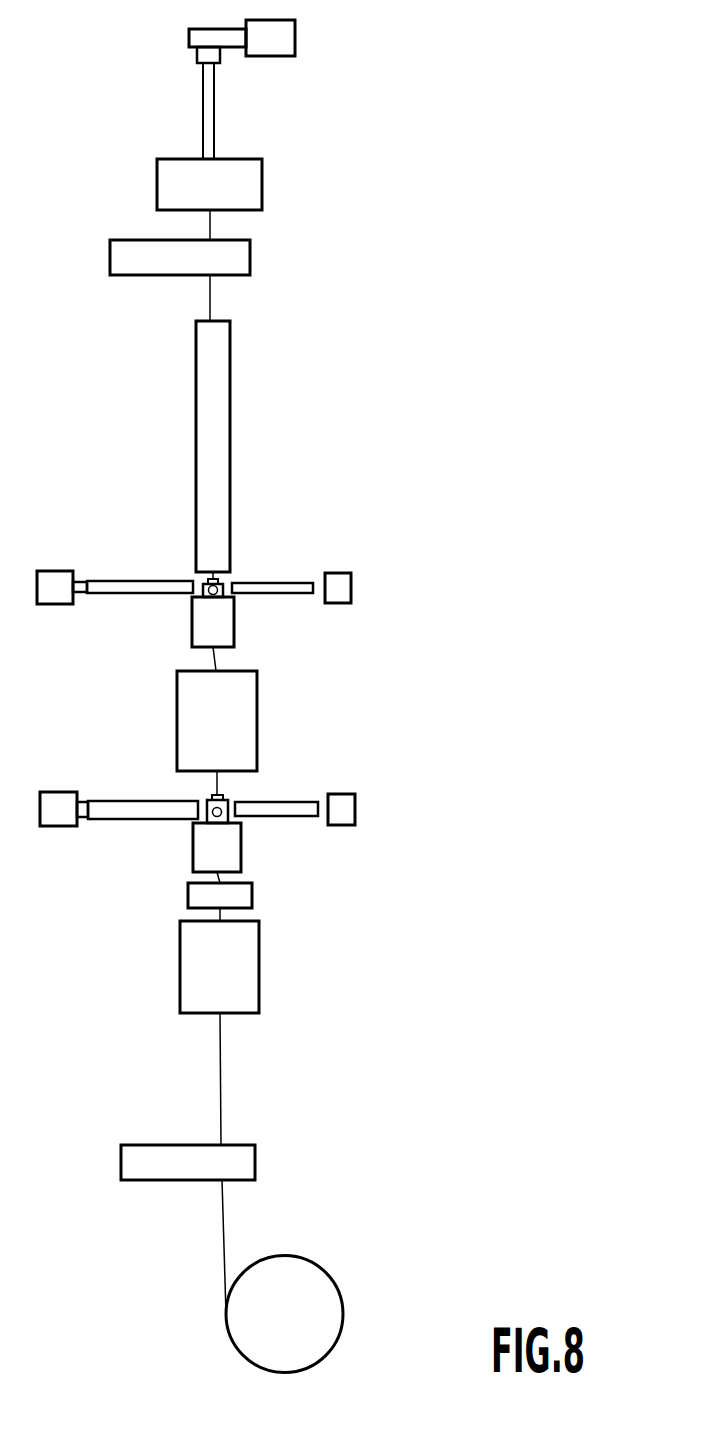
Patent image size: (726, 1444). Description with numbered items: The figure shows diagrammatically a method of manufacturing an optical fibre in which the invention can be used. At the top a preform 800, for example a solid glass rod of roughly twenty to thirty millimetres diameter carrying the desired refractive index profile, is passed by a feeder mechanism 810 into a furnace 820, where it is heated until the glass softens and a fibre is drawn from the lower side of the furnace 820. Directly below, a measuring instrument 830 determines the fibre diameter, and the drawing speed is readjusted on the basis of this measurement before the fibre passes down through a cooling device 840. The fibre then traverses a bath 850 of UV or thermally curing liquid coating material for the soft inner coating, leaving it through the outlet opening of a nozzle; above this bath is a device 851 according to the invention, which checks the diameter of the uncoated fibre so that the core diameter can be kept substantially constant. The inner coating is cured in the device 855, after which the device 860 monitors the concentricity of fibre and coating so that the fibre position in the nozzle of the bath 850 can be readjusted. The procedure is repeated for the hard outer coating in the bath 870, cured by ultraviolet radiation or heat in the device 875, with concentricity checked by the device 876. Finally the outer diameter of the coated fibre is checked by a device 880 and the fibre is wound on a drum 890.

The preform 800 is at (208, 107).
The feeder mechanism 810 is at (295, 38).
The furnace 820 is at (252, 184).
The measuring instrument 830 is at (245, 261).
The cooling device 840 is at (222, 448).
The bath 850 is at (222, 625).
The device for performing measurements on an object 851 is at (357, 590).
The curing device 855 is at (247, 722).
The concentricity monitoring device 860 is at (362, 812).
The bath 870 is at (230, 849).
The curing device 875 is at (248, 978).
The concentricity measuring device 876 is at (238, 895).
The outer diameter checking device 880 is at (243, 1162).
The drum 890 is at (310, 1295).